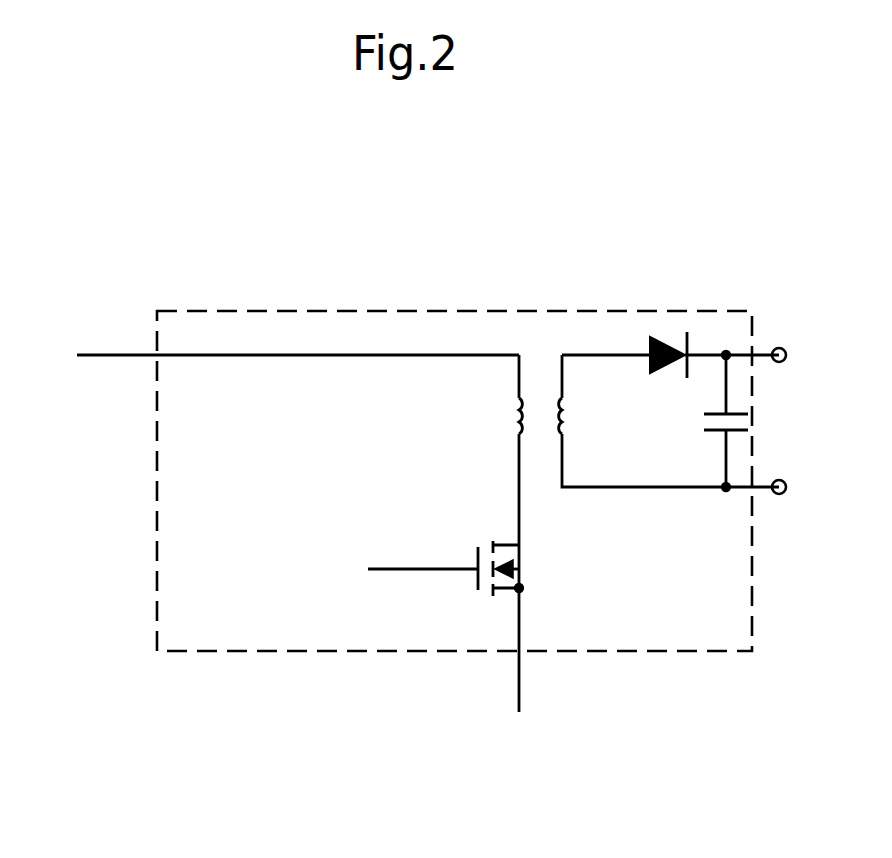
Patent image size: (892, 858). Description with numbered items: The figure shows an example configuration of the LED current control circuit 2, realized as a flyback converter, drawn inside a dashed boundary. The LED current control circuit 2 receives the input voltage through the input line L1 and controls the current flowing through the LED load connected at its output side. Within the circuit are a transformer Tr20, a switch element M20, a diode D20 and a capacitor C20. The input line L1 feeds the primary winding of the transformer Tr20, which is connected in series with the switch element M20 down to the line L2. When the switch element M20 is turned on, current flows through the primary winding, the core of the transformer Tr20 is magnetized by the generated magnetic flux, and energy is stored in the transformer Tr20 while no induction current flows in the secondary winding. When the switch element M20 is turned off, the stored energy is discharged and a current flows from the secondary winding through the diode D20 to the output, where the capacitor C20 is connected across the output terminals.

The LED current control circuit 2 is at (712, 311).
The input line L1 is at (107, 355).
The second line / reference potential terminal L2 is at (519, 692).
The transformer Tr20 is at (537, 438).
The diode D20 is at (685, 352).
The capacitor C20 is at (699, 421).
The switch element M20 is at (472, 568).